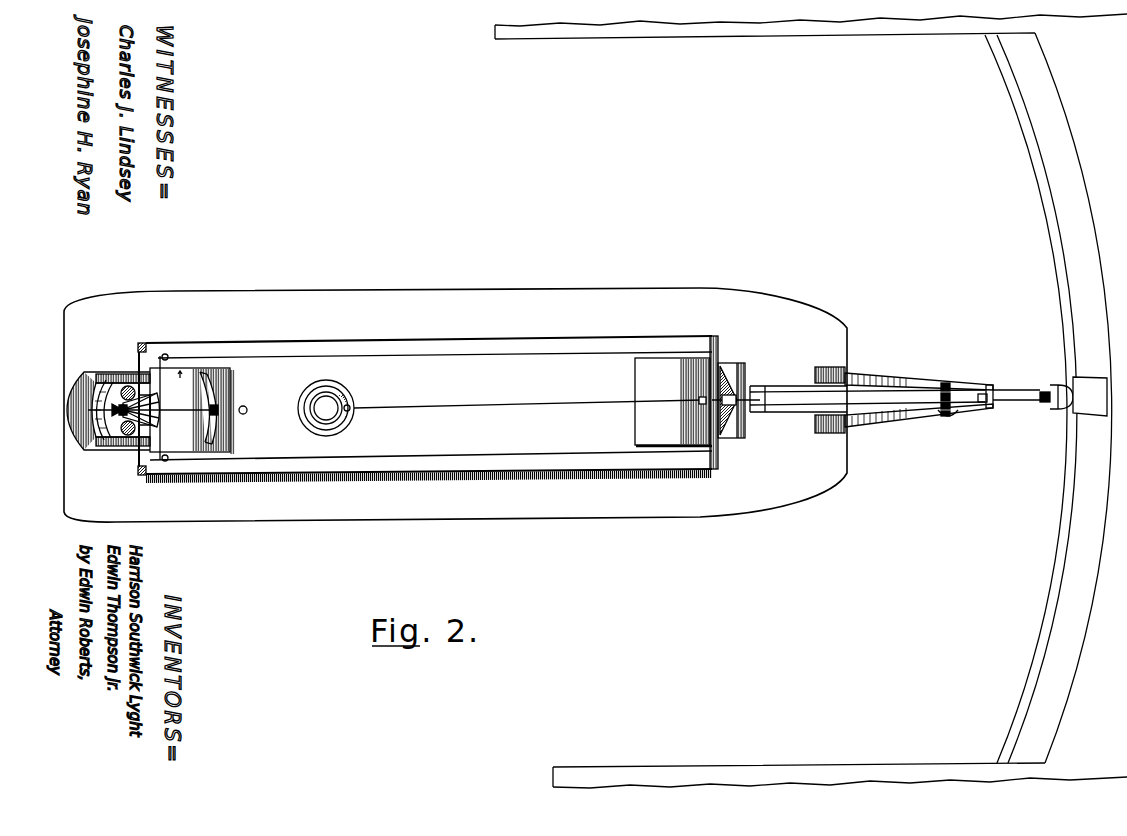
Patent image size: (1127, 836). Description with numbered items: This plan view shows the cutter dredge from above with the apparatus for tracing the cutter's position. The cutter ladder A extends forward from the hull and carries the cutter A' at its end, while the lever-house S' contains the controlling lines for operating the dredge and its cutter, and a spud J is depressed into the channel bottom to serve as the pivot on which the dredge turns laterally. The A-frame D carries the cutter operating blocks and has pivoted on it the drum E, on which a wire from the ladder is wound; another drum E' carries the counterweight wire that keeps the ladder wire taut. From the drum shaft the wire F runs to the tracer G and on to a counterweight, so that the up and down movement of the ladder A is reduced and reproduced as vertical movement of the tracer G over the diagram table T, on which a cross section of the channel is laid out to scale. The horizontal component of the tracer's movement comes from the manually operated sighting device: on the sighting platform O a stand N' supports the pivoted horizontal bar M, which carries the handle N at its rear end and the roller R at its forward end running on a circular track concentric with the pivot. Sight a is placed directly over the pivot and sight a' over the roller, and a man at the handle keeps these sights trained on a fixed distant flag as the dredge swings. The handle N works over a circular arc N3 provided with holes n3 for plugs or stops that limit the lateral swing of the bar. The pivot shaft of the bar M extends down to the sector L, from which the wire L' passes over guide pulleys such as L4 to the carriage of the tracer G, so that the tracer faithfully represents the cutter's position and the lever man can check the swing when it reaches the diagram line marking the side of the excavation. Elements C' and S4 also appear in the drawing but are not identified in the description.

The cutter ladder A is at (1033, 409).
The cutter A' is at (1090, 396).
The coupling block C' is at (946, 421).
The A-frame D is at (893, 418).
The drum E is at (948, 421).
The counterweight drum E' is at (967, 374).
The tracer wire F is at (782, 400).
The tracer G is at (738, 397).
The diagram table T is at (749, 434).
The lever-house S' is at (455, 405).
The block S4 is at (673, 402).
The guide pulley L4 is at (313, 356).
The sector wire L' is at (428, 420).
The sector L is at (136, 445).
The horizontal bar M is at (180, 408).
The roller R is at (214, 405).
The sight a is at (102, 382).
The forward sight a' is at (213, 423).
The spud J is at (123, 385).
The handle N is at (125, 436).
The stand N' is at (113, 419).
The circular arc N3 is at (98, 398).
The holes n3 is at (96, 406).
The sighting platform O is at (76, 438).